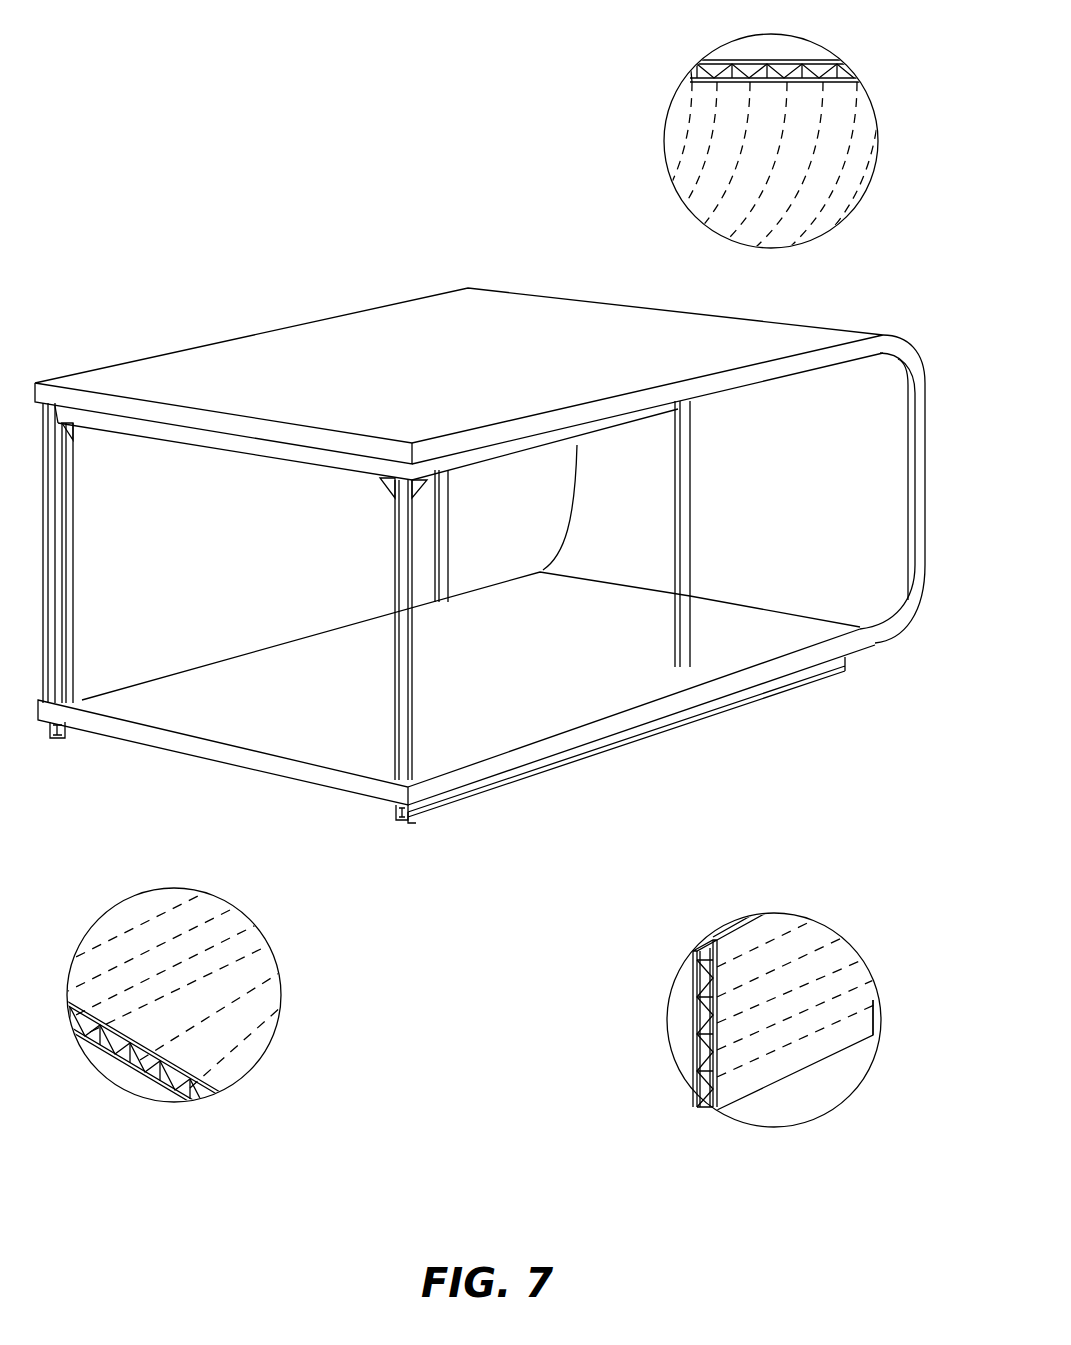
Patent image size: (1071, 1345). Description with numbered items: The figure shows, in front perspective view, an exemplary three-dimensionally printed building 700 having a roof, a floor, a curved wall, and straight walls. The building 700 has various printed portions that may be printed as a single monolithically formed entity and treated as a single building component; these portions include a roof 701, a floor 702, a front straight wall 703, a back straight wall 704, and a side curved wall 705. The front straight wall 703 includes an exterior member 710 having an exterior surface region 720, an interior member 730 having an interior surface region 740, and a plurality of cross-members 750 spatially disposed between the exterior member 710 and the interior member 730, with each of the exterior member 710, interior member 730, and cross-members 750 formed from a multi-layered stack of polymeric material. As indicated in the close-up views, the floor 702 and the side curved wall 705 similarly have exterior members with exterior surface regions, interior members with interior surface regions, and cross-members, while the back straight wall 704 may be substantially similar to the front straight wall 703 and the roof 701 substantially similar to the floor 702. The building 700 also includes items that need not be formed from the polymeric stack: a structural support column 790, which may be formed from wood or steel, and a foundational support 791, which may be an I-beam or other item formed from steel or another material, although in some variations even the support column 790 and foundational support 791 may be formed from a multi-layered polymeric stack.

The building 700 is at (216, 77).
The roof 701 is at (745, 245).
The floor 702 is at (188, 888).
The front straight wall 703 is at (775, 539).
The back straight wall 704 is at (220, 553).
The side curved wall 705 is at (746, 916).
The exterior member 710 is at (694, 950).
The exterior surface region 720 is at (688, 1017).
The interior member 730 is at (827, 965).
The interior surface region 740 is at (855, 992).
The cross-members 750 is at (698, 1050).
The structural support column 790 is at (398, 742).
The foundational support 791 is at (468, 800).